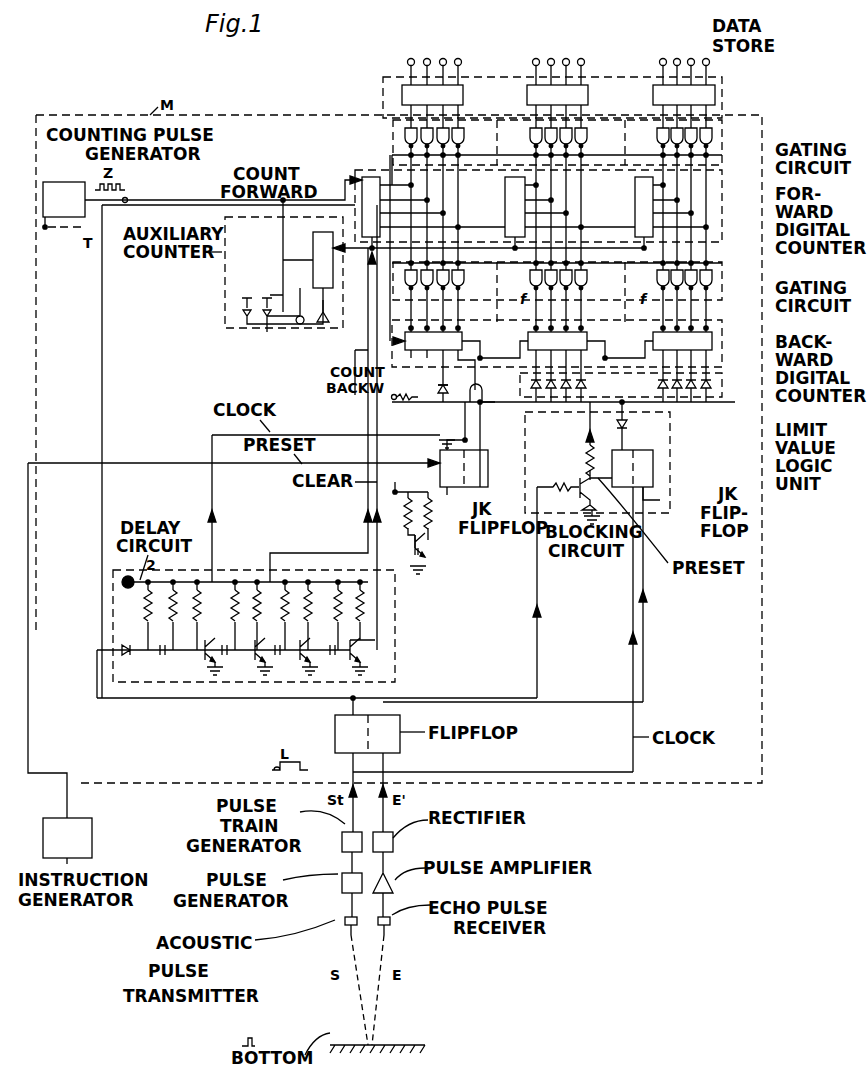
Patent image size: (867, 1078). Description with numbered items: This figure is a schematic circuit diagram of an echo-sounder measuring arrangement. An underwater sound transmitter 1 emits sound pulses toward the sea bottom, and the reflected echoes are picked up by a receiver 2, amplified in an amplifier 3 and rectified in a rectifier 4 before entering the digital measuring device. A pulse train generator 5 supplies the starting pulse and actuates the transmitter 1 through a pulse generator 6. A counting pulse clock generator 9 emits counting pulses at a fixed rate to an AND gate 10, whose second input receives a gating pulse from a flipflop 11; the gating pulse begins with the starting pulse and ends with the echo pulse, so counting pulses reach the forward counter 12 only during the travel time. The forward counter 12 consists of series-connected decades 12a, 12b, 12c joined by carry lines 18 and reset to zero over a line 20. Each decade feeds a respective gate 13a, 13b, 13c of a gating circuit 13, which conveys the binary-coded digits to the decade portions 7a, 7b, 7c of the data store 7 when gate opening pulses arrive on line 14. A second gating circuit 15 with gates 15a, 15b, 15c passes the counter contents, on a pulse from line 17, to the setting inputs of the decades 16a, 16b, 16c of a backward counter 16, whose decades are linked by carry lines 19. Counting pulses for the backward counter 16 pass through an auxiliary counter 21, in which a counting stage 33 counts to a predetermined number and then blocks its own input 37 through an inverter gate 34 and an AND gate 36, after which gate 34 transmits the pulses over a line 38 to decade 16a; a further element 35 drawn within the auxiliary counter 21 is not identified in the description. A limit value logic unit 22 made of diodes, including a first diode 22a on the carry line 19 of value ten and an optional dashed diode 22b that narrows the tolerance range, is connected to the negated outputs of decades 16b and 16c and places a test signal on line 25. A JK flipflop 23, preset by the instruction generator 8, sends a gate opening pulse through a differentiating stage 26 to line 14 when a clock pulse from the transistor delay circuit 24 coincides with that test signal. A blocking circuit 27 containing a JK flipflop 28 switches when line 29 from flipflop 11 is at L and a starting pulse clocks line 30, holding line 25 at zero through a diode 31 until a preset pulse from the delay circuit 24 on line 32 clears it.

The underwater sound transmitter 1 is at (344, 924).
The receiver 2 is at (390, 924).
The amplifier 3 is at (393, 890).
The rectifier 4 is at (393, 840).
The pulse train generator 5 is at (342, 846).
The pulse generator 6 is at (342, 888).
The data store 7 is at (550, 90).
The decade portion of data store 7a is at (403, 86).
The decade portion of data store 7b is at (530, 90).
The decade portion of data store 7c is at (658, 92).
The instruction generator 8 is at (92, 840).
The counting pulse clock generator 9 is at (58, 182).
The AND circuit gate 10 is at (128, 198).
The flipflop 11 is at (335, 743).
The forward counter 12 is at (519, 198).
The decade of forward counter 12a is at (370, 174).
The decade of forward counter 12b is at (505, 190).
The decade of forward counter 12c is at (635, 190).
The gating circuit 13 is at (557, 138).
The gate of gating circuit 13a is at (396, 122).
The gate of gating circuit 13b is at (596, 125).
The gate of gating circuit 13c is at (718, 120).
The line 14 is at (382, 420).
The second gating circuit 15 is at (543, 314).
The gate of second gating circuit 15a is at (400, 288).
The gate of second gating circuit 15b is at (520, 292).
The gate of second gating circuit 15c is at (642, 292).
The backward counter 16 is at (574, 278).
The decade of backward counter 16a is at (462, 340).
The decade of backward counter 16b is at (592, 345).
The decade of backward counter 16c is at (712, 338).
The line 17 is at (368, 273).
The carry lines 18 is at (470, 230).
The carry lines 19 is at (557, 355).
The line 20 is at (595, 242).
The auxiliary counter 21 is at (264, 282).
The limit value logic unit 22 is at (765, 427).
The limit value logic diode 22a is at (460, 409).
The further diode 22b is at (394, 383).
The JK flipflop 23 is at (488, 465).
The transistor delay circuit 24 is at (395, 625).
The line 25 is at (484, 410).
The differentiating stage 26 is at (430, 547).
The blocking circuit 27 is at (660, 501).
The JK flipflop 28 is at (653, 467).
The line 29 is at (586, 700).
The line 30 is at (541, 770).
The diode 31 is at (612, 428).
The line 32 is at (535, 555).
The counting stage 33 is at (313, 240).
The inverter gate 34 is at (242, 310).
The gate 35 is at (266, 335).
The AND gate 36 is at (296, 305).
The input of counting stage 37 is at (322, 326).
The line 38 is at (338, 355).